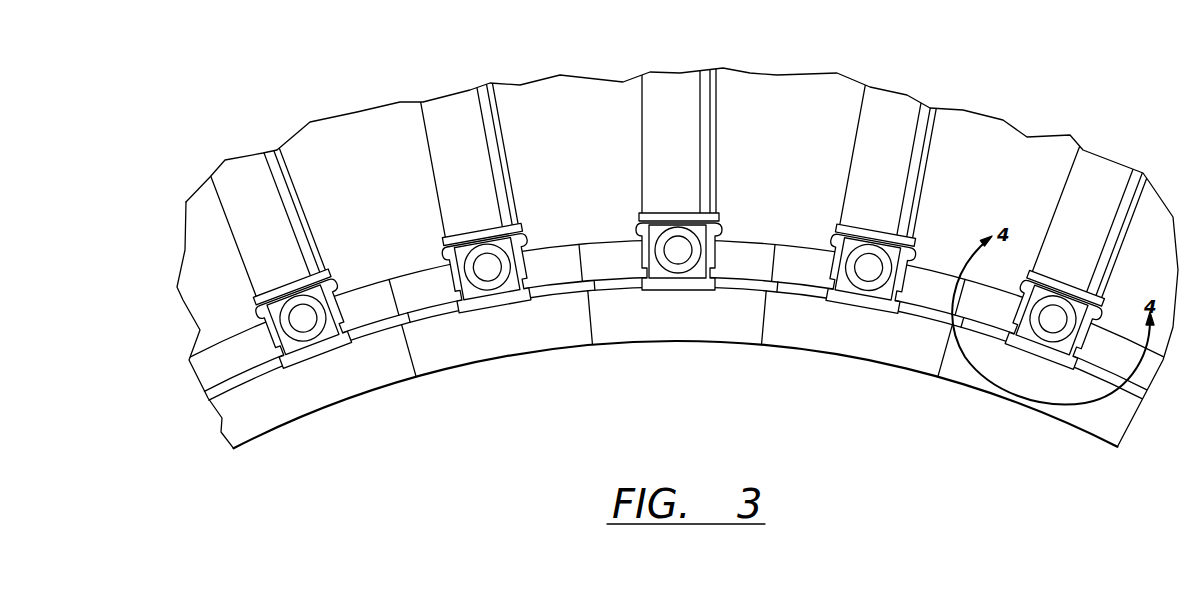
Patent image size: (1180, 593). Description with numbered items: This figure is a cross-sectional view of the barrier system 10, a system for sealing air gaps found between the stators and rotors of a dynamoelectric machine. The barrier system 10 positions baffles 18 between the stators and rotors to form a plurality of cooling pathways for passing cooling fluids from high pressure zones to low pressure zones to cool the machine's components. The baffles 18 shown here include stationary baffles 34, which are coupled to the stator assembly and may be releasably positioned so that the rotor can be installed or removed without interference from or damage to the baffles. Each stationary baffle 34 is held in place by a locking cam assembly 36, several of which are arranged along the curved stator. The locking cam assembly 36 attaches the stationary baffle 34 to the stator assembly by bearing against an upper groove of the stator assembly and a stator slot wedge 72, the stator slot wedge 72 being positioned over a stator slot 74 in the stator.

The barrier system 10 is at (589, 400).
The baffles 18 is at (477, 348).
The stationary baffles 34 is at (443, 380).
The locking cam assembly 36 is at (668, 300).
The stator slot wedge 72 is at (438, 242).
The stator slot 74 is at (447, 116).